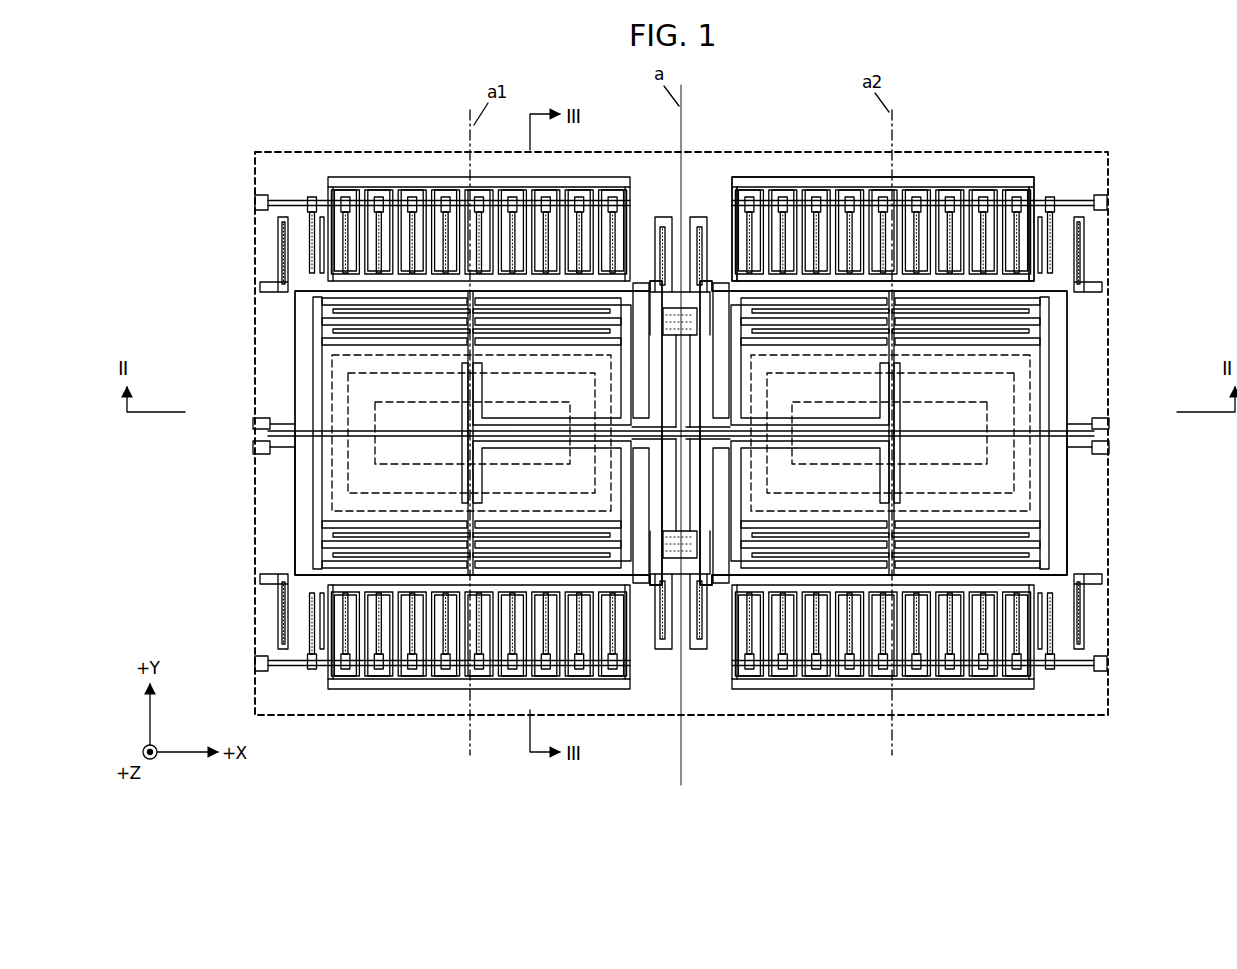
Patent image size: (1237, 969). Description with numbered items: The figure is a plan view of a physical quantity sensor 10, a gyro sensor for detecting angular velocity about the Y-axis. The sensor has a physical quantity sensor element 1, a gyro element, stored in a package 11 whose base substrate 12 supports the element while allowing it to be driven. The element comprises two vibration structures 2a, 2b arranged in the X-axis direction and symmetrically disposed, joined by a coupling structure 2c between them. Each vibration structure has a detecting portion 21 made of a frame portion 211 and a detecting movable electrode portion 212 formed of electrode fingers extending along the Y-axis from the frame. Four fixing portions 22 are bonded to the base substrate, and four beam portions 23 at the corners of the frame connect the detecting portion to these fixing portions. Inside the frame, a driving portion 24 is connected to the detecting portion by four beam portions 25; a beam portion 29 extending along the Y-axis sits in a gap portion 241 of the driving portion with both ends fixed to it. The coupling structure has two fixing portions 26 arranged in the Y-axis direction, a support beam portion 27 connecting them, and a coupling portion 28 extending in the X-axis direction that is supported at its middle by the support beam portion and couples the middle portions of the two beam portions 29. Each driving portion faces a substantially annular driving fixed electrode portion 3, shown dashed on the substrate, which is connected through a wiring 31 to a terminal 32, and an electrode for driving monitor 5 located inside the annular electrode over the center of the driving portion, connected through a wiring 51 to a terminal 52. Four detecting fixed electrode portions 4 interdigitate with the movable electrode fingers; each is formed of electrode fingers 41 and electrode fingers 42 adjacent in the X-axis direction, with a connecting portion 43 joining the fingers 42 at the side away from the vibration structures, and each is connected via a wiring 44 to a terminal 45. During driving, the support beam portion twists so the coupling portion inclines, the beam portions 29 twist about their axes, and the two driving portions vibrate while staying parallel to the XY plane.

The physical quantity sensor element 1 is at (955, 165).
The physical quantity sensor 10 is at (1114, 111).
The package 11 is at (681, 433).
The base substrate 12 is at (788, 151).
The vibration structure 2a is at (293, 333).
The vibration structure 2b is at (1069, 333).
The coupling structure 2c is at (684, 302).
The detecting portion 21 is at (681, 433).
The frame portion 211 is at (295, 500).
The detecting movable electrode portion 212 is at (320, 232).
The fixing portion 22 is at (262, 286).
The beam portion 23 is at (283, 250).
The driving portion 24 is at (322, 418).
The gap portion 241 is at (482, 478).
The beam portion 25 is at (311, 320).
The fixing portion 26 is at (681, 336).
The support beam portion 27 is at (684, 400).
The coupling portion 28 is at (667, 432).
The beam portion 29 is at (469, 386).
The driving fixed electrode portion 3 is at (332, 357).
The wiring 31 is at (282, 442).
The terminal 32 is at (253, 448).
The detecting fixed electrode portion 4 is at (444, 175).
The electrode finger 41 is at (320, 197).
The electrode finger 42 is at (331, 225).
The connecting portion 43 is at (388, 177).
The wiring 44 is at (290, 200).
The terminal 45 is at (255, 203).
The electrode for driving monitor 5 is at (348, 375).
The wiring 51 is at (253, 423).
The terminal 52 is at (268, 434).